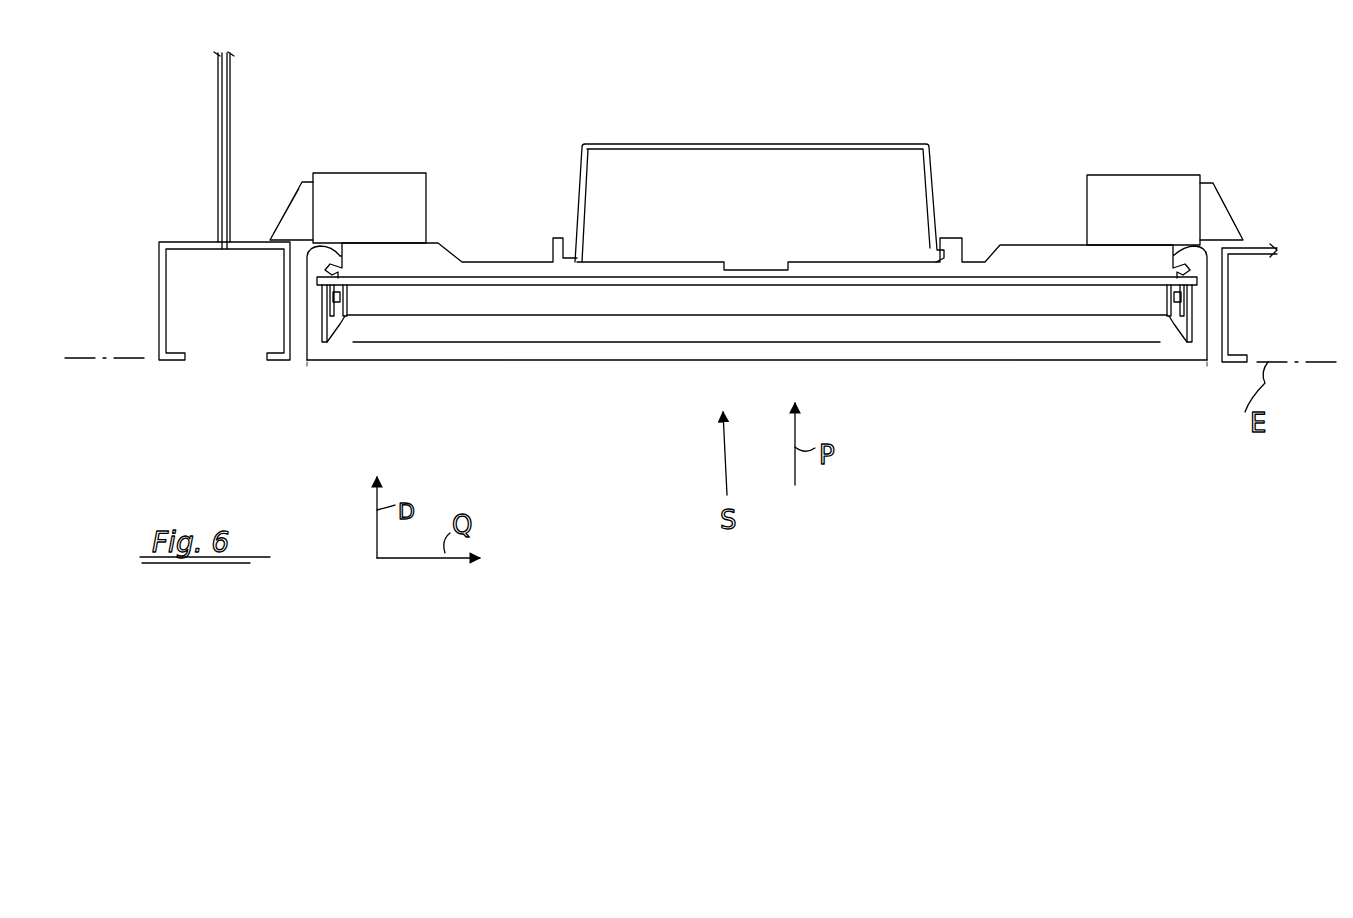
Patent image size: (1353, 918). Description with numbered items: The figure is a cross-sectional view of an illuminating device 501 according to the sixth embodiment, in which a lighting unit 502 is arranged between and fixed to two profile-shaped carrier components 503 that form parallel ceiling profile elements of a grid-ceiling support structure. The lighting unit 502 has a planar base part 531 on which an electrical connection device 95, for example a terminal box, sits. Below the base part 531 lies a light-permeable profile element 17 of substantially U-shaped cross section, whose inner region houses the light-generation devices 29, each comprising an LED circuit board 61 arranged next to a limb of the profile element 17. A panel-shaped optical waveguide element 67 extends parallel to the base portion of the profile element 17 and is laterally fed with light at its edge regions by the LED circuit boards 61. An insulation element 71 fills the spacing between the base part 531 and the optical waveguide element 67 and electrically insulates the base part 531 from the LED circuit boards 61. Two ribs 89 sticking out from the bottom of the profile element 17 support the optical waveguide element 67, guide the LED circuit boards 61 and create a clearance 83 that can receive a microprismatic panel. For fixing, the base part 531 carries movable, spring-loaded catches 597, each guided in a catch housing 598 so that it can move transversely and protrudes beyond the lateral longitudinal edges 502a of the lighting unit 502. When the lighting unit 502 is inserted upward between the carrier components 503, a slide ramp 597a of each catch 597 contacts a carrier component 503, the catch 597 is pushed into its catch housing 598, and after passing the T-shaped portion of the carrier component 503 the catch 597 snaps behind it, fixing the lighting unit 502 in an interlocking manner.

The profile-shaped carrier component 503 is at (231, 126).
The catch housing 598 is at (362, 180).
The movable catch 597 is at (293, 218).
The slide ramp 597a is at (280, 220).
The planar base part 531 is at (1015, 257).
The electrical connection device 95 is at (762, 176).
The insulation element 71 is at (500, 287).
The light-generation device 29 is at (348, 300).
The LED circuit board 61 is at (328, 344).
The rib 89 is at (350, 323).
The optical waveguide element 67 is at (1002, 308).
The profile element 17 is at (877, 353).
The clearance 83 is at (648, 333).
The lighting unit 502 is at (658, 382).
The lateral longitudinal edge 502a is at (307, 372).
The illuminating device 501 is at (923, 523).